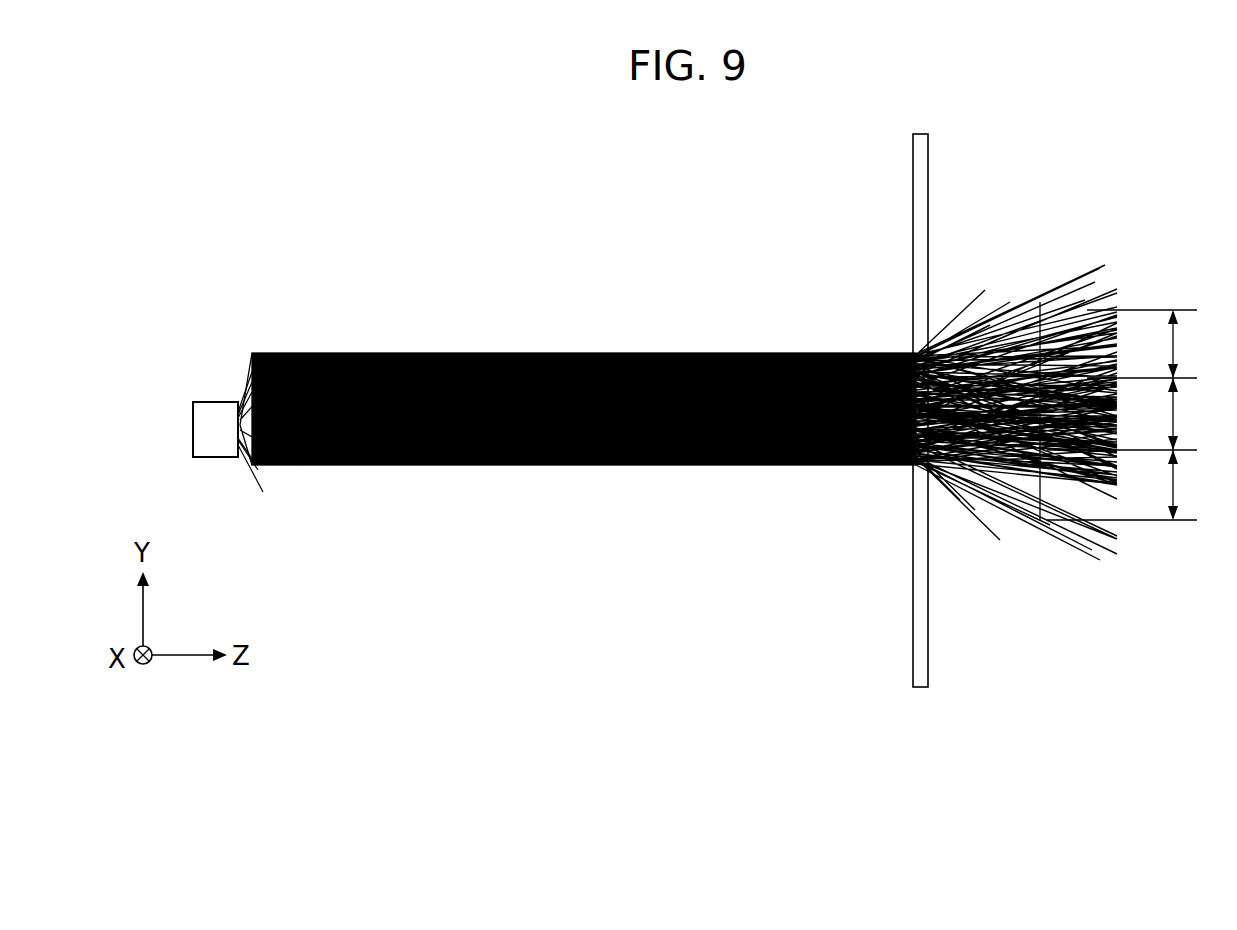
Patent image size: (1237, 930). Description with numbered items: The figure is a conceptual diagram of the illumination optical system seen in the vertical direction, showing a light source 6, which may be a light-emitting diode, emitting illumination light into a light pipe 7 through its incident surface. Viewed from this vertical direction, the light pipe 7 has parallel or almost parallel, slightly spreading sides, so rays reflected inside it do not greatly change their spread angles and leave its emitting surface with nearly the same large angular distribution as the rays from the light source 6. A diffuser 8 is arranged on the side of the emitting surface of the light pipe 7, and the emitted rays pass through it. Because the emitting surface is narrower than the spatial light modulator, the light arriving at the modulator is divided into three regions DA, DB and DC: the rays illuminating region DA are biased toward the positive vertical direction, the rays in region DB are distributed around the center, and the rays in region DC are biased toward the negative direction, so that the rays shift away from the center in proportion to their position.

The light source 6 is at (212, 410).
The light pipe 7 is at (509, 354).
The diffuser 8 is at (921, 206).
The region DA is at (1204, 346).
The region DB is at (1204, 416).
The region DC is at (1204, 489).